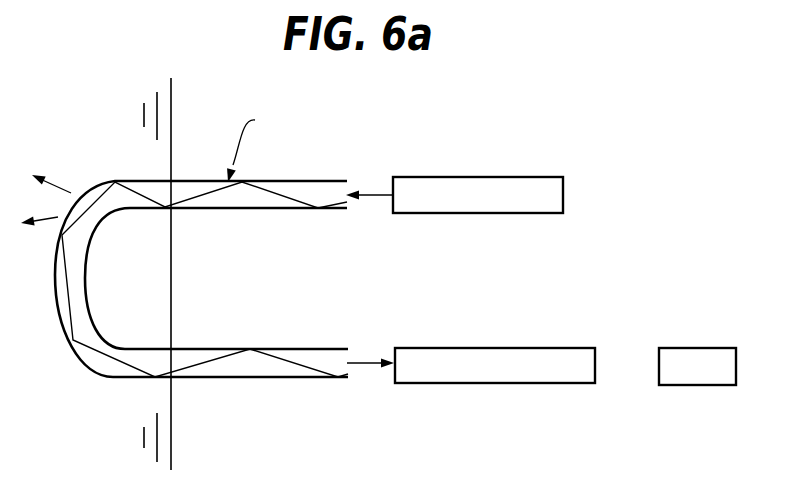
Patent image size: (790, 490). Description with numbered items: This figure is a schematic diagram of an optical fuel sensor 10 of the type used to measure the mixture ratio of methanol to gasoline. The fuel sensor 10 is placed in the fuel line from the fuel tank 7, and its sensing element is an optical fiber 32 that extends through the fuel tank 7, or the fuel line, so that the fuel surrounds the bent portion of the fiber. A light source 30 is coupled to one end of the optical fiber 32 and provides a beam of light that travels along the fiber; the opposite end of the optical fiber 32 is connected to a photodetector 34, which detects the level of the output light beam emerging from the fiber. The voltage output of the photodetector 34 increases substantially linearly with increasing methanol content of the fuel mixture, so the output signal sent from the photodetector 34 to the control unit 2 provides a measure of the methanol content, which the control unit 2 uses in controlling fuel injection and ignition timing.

The control unit 2 is at (736, 373).
The fuel tank 7 is at (171, 80).
The fuel sensor 10 is at (391, 266).
The light source 30 is at (555, 213).
The optical fiber 32 is at (278, 209).
The photodetector 34 is at (595, 373).